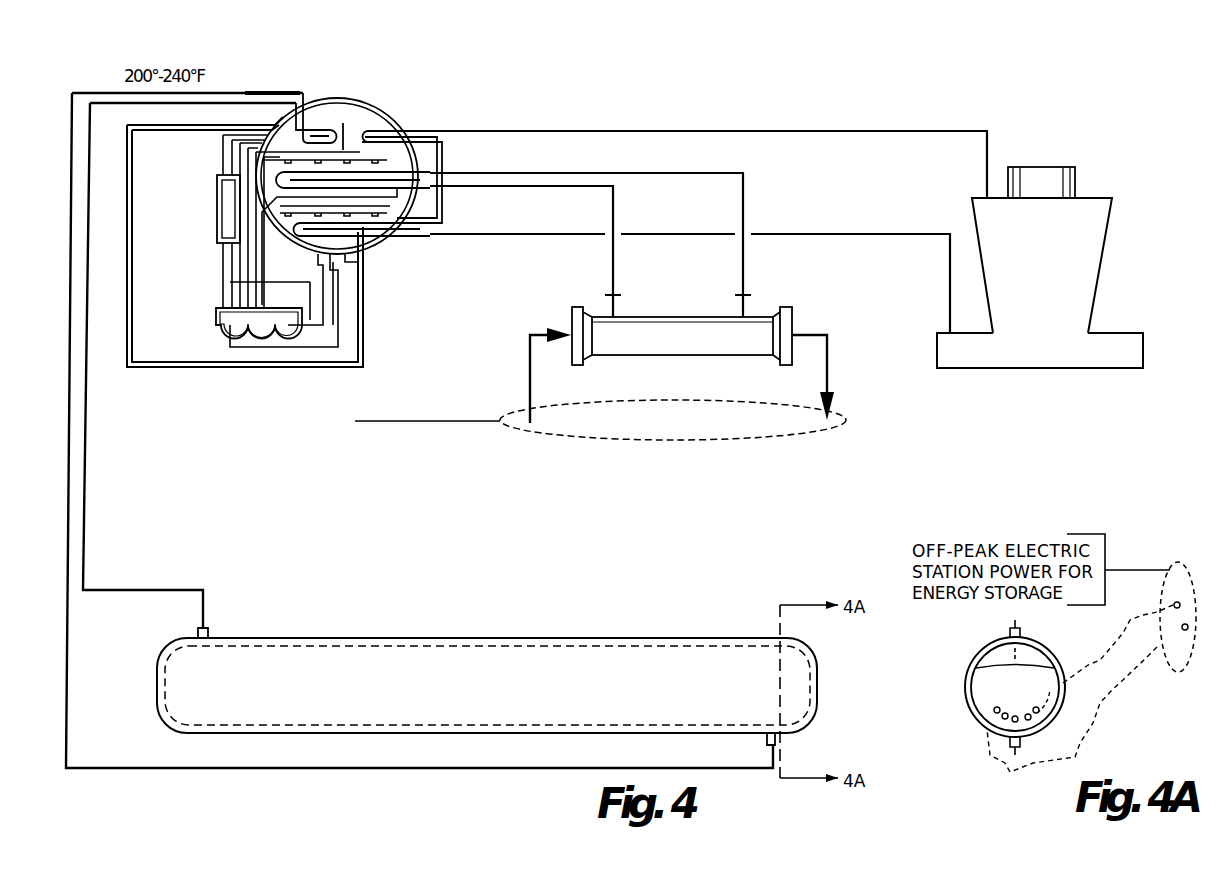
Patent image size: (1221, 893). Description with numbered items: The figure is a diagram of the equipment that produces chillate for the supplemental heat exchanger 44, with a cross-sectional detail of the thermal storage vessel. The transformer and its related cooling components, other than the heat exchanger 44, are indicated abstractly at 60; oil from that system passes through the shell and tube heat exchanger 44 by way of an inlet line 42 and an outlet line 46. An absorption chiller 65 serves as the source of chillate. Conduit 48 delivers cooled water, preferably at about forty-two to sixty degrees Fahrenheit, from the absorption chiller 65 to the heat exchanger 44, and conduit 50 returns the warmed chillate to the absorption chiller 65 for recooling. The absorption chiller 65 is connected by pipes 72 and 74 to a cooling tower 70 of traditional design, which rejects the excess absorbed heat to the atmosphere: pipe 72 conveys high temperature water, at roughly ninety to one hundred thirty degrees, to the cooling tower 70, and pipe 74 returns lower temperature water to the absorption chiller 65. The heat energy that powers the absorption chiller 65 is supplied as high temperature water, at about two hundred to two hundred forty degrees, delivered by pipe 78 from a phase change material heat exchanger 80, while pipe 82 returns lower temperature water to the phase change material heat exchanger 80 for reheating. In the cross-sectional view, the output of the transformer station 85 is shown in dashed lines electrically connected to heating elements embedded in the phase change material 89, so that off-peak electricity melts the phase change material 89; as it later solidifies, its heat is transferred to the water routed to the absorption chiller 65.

In FIG. 4, the conditioned oil inlet line 42 is at (527, 370).
In FIG. 4, the supplemental heat exchanger 44 is at (673, 330).
In FIG. 4, the conditioned oil outlet line 46 is at (828, 363).
In FIG. 4, the conduit 48 is at (743, 262).
In FIG. 4, the conduit 50 is at (613, 258).
In FIG. 4, the transformer and related components 60 is at (677, 424).
In FIG. 4, the absorption chiller 65 is at (384, 101).
In FIG. 4, the cooling tower 70 is at (1080, 236).
In FIG. 4, the pipe 72 is at (822, 129).
In FIG. 4, the pipe 74 is at (908, 231).
In FIG. 4, the pipe 78 is at (68, 443).
In FIG. 4, the phase change material heat exchanger 80 is at (184, 681).
In FIG. 4A, the phase change material heat exchanger 80 is at (968, 656).
In FIG. 4, the pipe 82 is at (87, 497).
In FIG. 4A, the transformer station 85 is at (1185, 578).
In FIG. 4A, the phase change material 89 is at (988, 692).